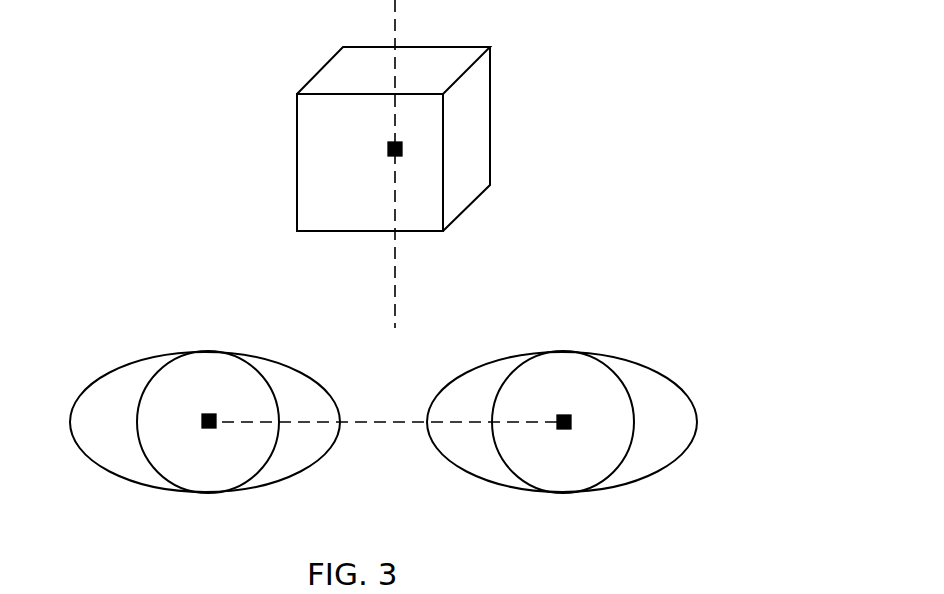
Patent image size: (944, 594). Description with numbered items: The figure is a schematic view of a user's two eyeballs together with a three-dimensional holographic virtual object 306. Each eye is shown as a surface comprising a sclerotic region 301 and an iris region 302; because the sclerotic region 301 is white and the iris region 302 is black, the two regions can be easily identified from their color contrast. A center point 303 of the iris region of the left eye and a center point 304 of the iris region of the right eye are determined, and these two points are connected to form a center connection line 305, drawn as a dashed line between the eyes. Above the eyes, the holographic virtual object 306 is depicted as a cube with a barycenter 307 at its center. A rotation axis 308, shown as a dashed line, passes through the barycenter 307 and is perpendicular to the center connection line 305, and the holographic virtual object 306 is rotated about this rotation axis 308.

The sclerotic region 301 is at (113, 400).
The iris region 302 is at (193, 386).
The center point of the iris region of the left eye 303 is at (208, 428).
The center point of the iris region of the right eye 304 is at (568, 430).
The center connection line 305 is at (372, 425).
The 3D holographic virtual object 306 is at (493, 72).
The barycenter 307 is at (402, 142).
The rotation axis 308 is at (395, 302).